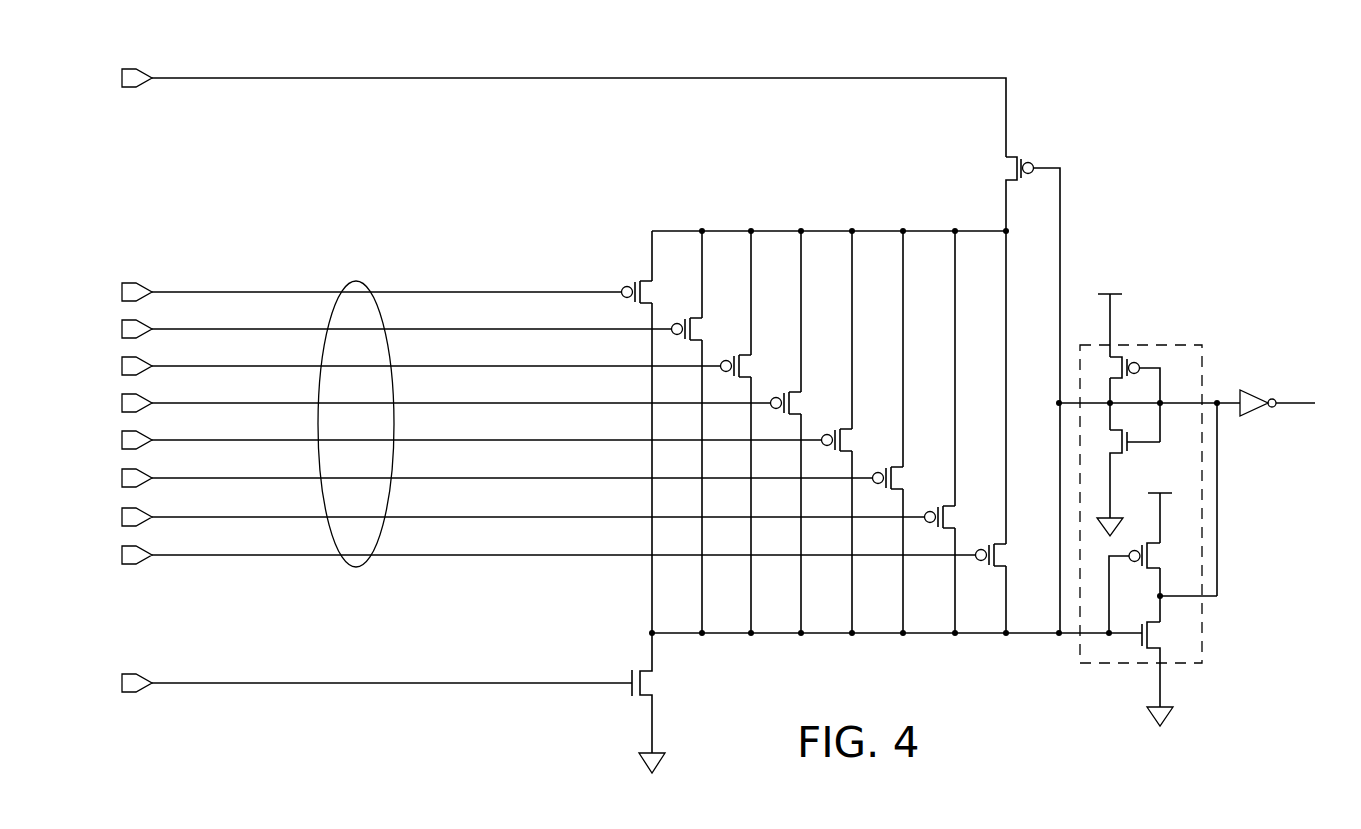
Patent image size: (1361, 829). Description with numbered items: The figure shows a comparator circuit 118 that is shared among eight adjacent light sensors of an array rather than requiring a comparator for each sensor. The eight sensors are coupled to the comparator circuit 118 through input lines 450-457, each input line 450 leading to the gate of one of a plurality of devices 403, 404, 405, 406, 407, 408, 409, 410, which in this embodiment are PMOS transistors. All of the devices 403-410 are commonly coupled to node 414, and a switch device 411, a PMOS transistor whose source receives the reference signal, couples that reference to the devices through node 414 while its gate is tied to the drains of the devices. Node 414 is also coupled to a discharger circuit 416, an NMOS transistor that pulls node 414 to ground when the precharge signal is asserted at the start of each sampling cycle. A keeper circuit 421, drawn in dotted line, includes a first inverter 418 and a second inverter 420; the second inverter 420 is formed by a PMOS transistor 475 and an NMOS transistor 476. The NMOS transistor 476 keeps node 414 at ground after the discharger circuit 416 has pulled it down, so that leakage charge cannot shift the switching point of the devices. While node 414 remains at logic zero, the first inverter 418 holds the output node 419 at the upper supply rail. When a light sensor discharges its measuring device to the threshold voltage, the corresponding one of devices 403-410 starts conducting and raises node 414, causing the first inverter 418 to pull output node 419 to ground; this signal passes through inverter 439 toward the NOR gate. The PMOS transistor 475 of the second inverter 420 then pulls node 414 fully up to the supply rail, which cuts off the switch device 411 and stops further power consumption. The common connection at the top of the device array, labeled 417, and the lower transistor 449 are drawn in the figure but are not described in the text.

The comparator circuit 118 is at (703, 28).
The device 403 is at (649, 281).
The device 404 is at (700, 318).
The device 405 is at (749, 355).
The device 406 is at (799, 392).
The device 407 is at (850, 429).
The device 408 is at (901, 467).
The device 409 is at (953, 506).
The device 410 is at (1004, 544).
The switch device 411 is at (1019, 158).
The node 414 is at (650, 633).
The discharger circuit 416 is at (654, 673).
The common drain node / top bus 417 is at (1004, 229).
The first inverter 418 is at (1162, 575).
The output node 419 is at (1219, 406).
The second inverter 420 is at (1163, 386).
The keeper circuit 421 is at (1205, 344).
The inverter 439 is at (1262, 392).
The NMOS transistor of bias circuit 449 is at (1163, 645).
The input line 450 is at (1152, 571).
The input lines 450-457 is at (366, 560).
The PMOS transistor 475 is at (1113, 357).
The NMOS transistor 476 is at (1115, 448).